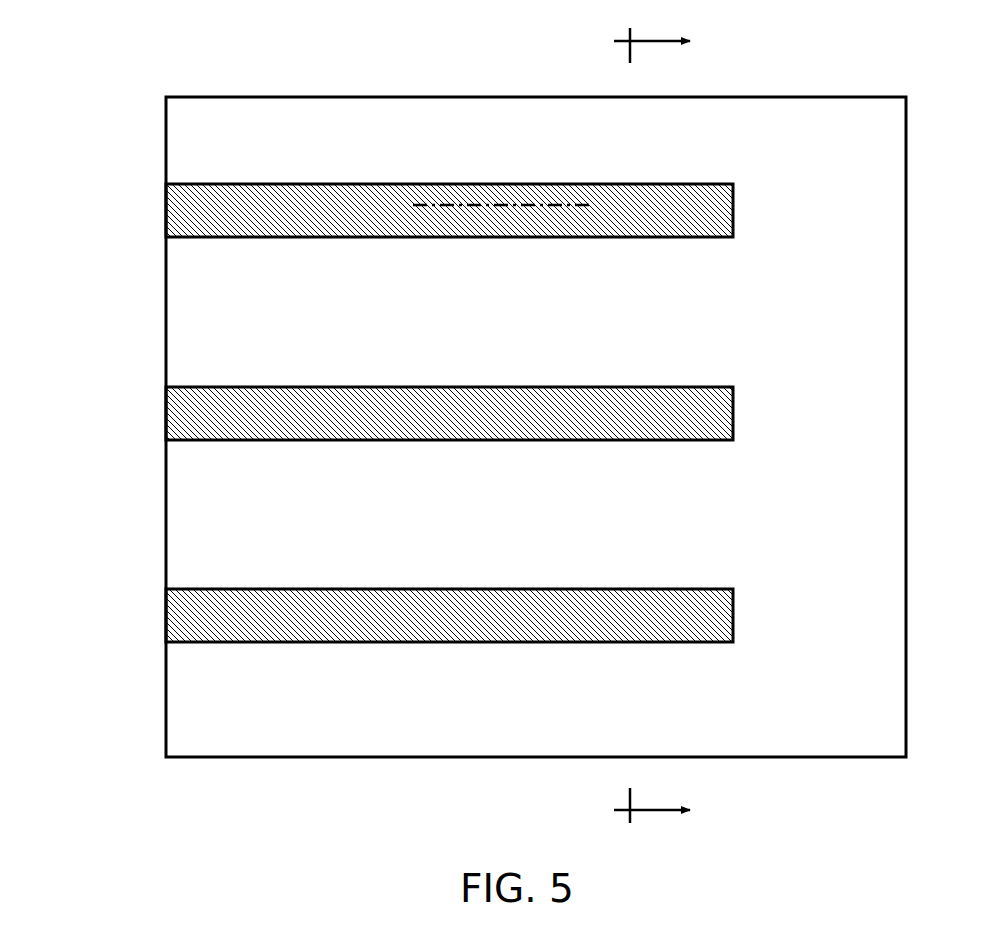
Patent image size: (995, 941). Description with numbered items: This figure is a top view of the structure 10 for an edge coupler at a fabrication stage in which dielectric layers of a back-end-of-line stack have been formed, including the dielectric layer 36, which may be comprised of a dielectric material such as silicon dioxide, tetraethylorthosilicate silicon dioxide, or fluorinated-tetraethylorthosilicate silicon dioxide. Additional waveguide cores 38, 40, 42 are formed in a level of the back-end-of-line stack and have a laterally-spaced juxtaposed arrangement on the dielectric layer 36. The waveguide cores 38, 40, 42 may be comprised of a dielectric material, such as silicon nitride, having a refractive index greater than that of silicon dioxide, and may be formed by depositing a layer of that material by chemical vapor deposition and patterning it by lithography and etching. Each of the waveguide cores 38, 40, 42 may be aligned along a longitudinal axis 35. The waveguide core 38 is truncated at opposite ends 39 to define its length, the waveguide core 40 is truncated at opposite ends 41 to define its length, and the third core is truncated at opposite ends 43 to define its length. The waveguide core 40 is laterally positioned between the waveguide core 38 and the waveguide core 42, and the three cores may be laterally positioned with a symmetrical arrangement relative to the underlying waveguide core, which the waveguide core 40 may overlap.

The structure 10 is at (118, 62).
The longitudinal axis 35 is at (479, 205).
The dielectric layer 36 is at (215, 520).
The waveguide core 38 is at (364, 213).
The opposite ends 39 is at (166, 207).
The waveguide core 40 is at (350, 420).
The opposite ends 41 is at (166, 420).
The waveguide core 42 is at (333, 622).
The opposite ends 43 is at (166, 626).